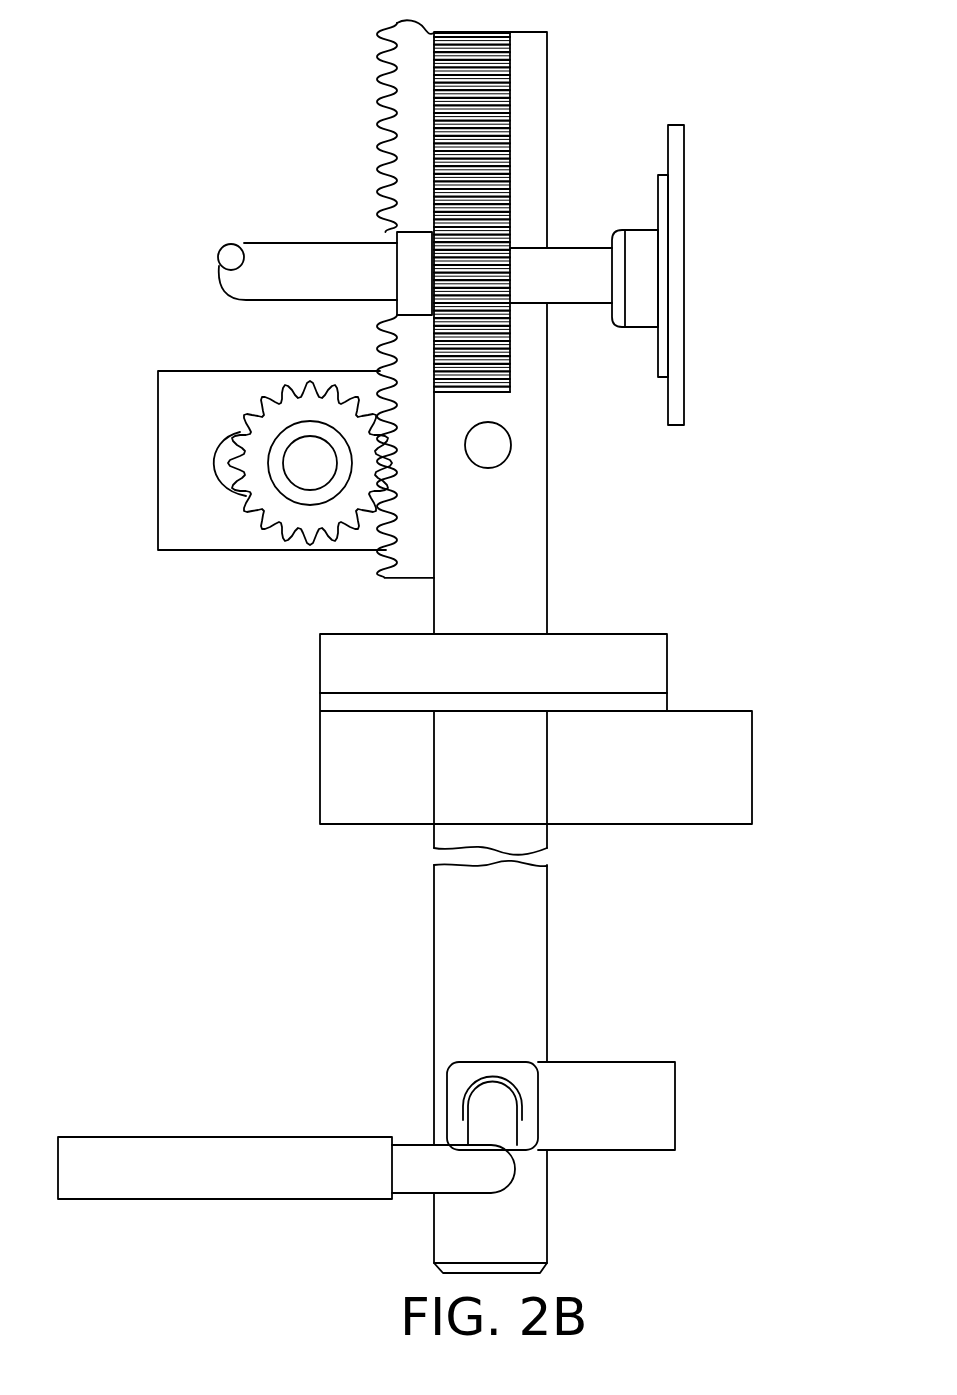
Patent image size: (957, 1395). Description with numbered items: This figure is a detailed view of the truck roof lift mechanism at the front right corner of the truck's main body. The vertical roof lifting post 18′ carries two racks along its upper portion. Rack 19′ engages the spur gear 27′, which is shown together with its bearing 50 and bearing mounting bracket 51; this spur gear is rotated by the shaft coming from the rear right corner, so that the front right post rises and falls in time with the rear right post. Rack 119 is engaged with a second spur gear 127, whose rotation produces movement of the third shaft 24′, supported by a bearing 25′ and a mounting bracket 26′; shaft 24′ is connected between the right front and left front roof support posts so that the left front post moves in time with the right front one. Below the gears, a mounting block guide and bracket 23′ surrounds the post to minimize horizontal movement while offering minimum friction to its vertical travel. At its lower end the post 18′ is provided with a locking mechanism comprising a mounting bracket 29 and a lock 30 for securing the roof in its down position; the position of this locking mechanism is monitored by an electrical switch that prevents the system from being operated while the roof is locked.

The roof lifting post 18′ is at (533, 83).
The rack 119 is at (434, 63).
The spur gear 127 is at (497, 345).
The rack 19′ is at (405, 137).
The third shaft 24′ is at (305, 250).
The bearing 25′ is at (638, 242).
The mounting bracket 26′ is at (678, 338).
The bearing mounting bracket 51 is at (177, 470).
The bearing 50 is at (238, 435).
The spur gear 27′ is at (297, 502).
The mounting block guide and bracket 23′ is at (645, 673).
The mounting bracket 29 is at (653, 1082).
The lock 30 is at (290, 1153).